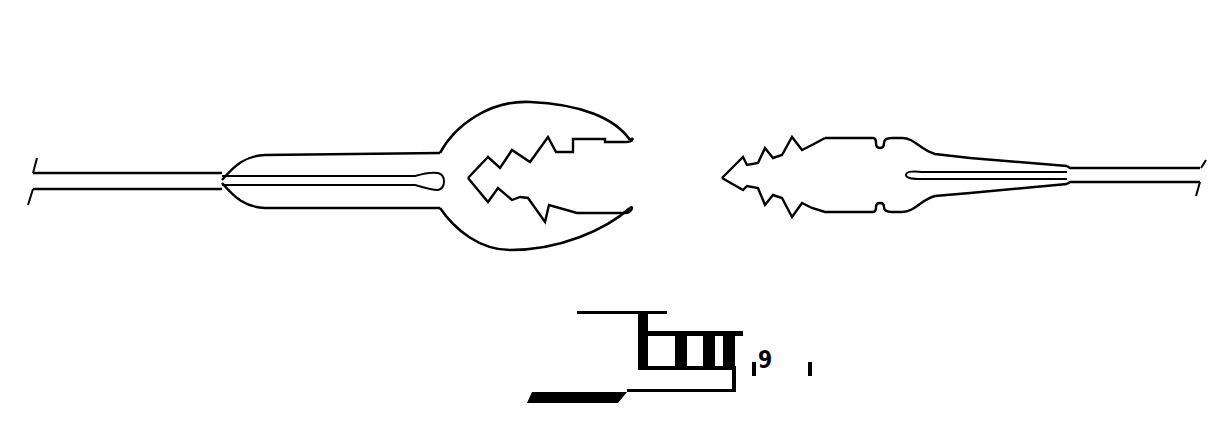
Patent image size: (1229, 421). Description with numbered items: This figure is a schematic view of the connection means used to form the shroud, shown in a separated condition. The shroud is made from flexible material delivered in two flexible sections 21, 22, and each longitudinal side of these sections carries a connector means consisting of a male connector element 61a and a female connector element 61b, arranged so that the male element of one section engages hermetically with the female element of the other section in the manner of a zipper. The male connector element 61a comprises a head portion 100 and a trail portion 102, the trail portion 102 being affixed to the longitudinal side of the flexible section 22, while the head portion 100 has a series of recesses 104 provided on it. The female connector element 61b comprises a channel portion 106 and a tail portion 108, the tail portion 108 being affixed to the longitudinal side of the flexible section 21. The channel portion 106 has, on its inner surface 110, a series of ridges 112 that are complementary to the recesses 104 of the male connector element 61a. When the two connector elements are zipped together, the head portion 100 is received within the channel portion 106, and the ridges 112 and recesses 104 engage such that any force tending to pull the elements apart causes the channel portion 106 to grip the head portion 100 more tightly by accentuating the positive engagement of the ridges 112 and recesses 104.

The flexible section 21 is at (153, 172).
The flexible section 22 is at (1127, 168).
The male connector element 61a is at (846, 191).
The female connector element 61b is at (567, 112).
The head portion 100 is at (853, 212).
The trail portion 102 is at (1007, 192).
The recesses 104 is at (773, 157).
The channel portion 106 is at (583, 112).
The tail portion 108 is at (342, 208).
The inner surface 110 is at (610, 148).
The ridges 112 is at (525, 207).